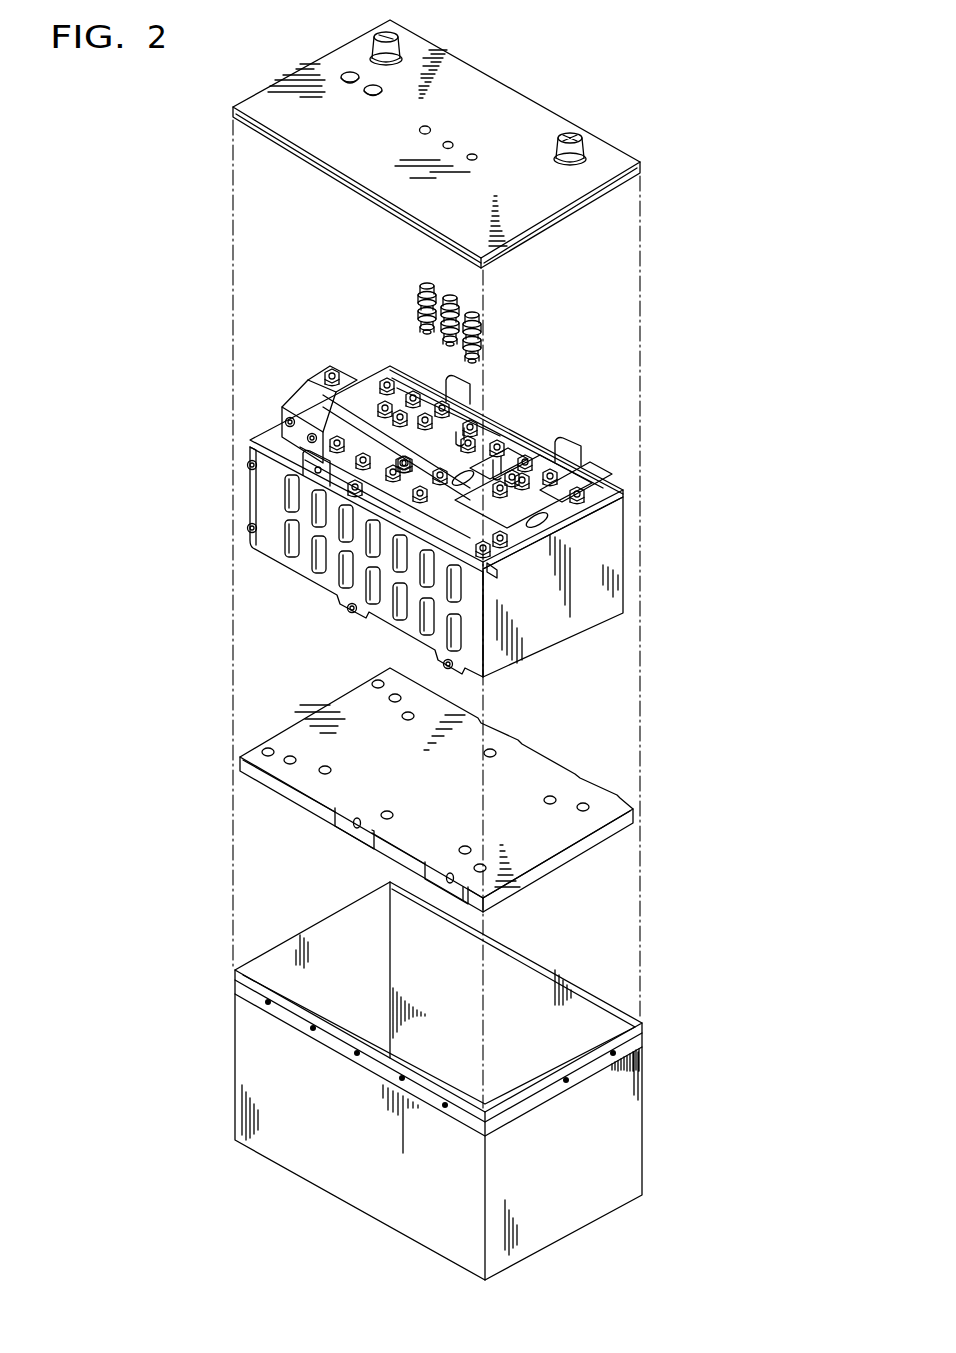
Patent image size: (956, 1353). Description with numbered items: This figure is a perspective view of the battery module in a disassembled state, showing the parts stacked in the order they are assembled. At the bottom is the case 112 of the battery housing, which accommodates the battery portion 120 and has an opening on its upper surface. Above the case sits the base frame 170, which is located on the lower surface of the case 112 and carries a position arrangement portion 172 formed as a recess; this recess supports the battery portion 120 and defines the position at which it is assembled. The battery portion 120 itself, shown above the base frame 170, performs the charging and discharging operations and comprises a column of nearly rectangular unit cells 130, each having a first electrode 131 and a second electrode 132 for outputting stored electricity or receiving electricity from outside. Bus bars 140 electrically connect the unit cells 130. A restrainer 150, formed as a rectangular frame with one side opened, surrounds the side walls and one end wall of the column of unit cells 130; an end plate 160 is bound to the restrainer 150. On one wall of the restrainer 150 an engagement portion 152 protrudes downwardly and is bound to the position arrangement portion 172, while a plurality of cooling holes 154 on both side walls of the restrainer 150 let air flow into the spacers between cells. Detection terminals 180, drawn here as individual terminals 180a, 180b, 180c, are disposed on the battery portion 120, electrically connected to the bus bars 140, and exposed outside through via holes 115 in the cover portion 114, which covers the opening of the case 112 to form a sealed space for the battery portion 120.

The case 112 is at (252, 1042).
The cover portion 114 is at (557, 118).
The via holes 115 is at (470, 155).
The battery portion 120 is at (406, 521).
The unit cells 130 is at (473, 521).
The first electrode 131 is at (612, 480).
The second electrode 132 is at (487, 563).
The bus bars 140 is at (546, 504).
The restrainer 150 is at (329, 562).
The engagement portion 152 is at (359, 616).
The cooling holes 154 is at (290, 547).
The end plate 160 is at (258, 450).
The base frame 170 is at (436, 790).
The position arrangement portion 172 is at (346, 834).
The detection terminals 180 is at (439, 299).
The first fuse 180a is at (417, 288).
The second fuse 180b is at (458, 303).
The third fuse 180c is at (480, 318).